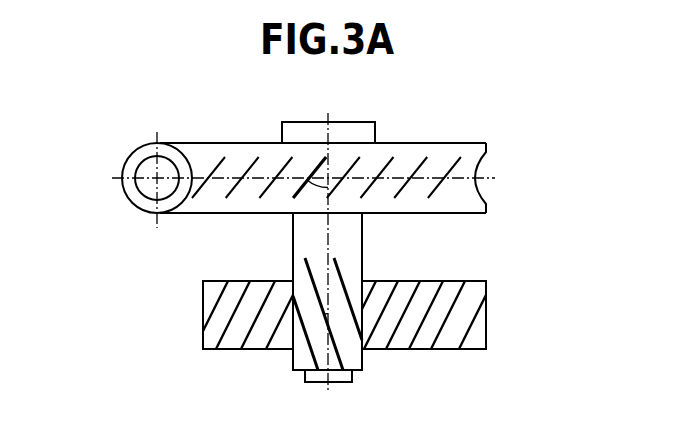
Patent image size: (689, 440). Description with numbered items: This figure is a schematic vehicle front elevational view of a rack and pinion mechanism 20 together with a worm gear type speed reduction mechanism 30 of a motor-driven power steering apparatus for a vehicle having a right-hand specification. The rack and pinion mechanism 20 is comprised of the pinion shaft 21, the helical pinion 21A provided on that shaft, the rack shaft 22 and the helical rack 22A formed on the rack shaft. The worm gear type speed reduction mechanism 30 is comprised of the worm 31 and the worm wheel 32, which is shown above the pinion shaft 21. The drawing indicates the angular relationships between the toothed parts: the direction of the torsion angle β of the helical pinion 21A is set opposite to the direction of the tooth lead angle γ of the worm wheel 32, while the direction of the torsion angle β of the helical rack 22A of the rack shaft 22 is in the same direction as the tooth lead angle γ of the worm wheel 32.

The rack and pinion mechanism 20 is at (349, 317).
The pinion shaft 21 is at (288, 316).
The pinion 21A is at (314, 354).
The rack shaft 22 is at (303, 327).
The rack 22A is at (220, 327).
The worm gear type speed reduction mechanism 30 is at (157, 120).
The worm 31 is at (109, 165).
The worm wheel 32 is at (482, 136).